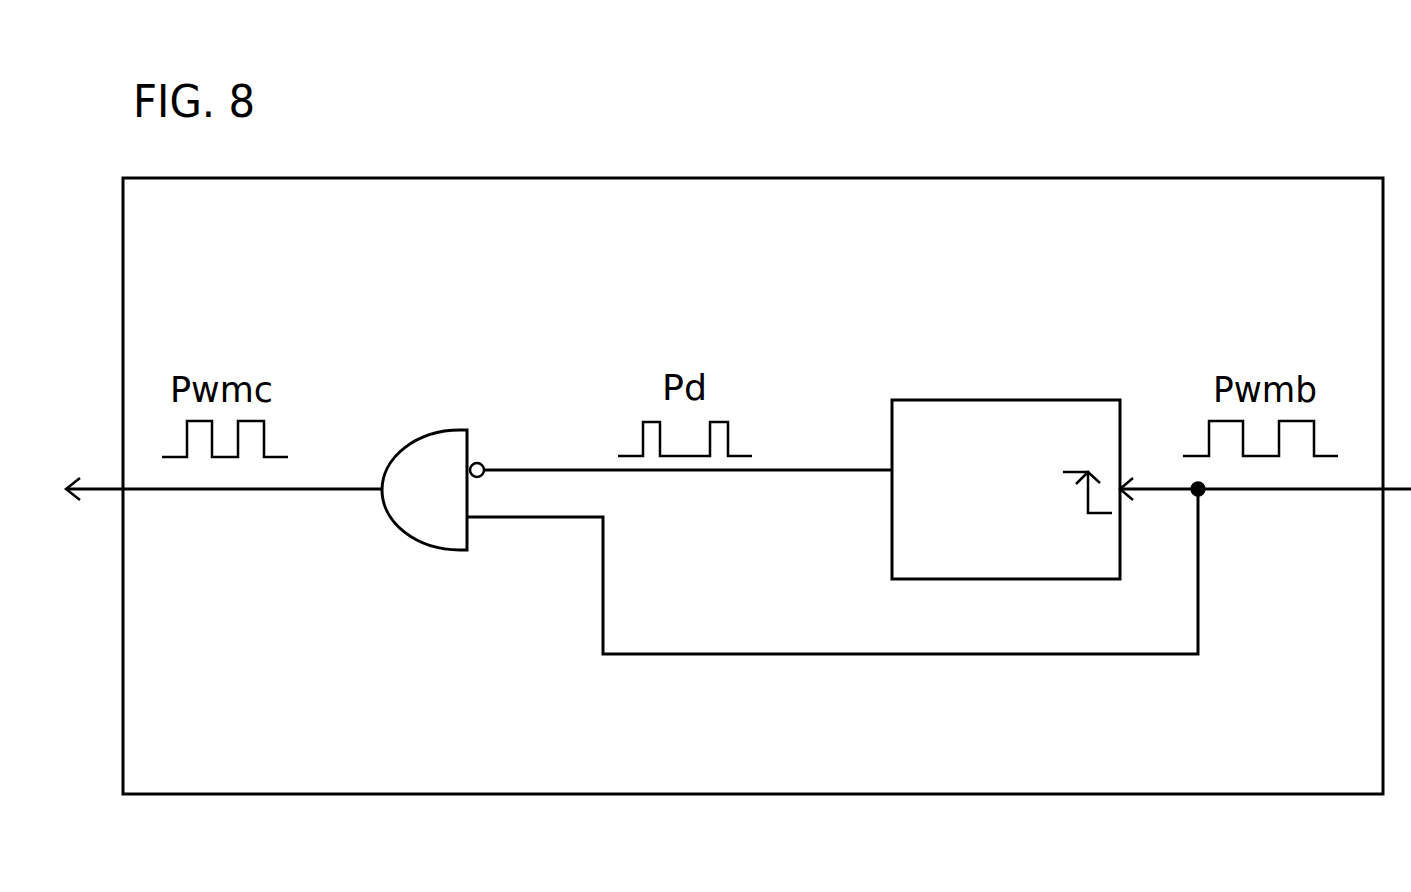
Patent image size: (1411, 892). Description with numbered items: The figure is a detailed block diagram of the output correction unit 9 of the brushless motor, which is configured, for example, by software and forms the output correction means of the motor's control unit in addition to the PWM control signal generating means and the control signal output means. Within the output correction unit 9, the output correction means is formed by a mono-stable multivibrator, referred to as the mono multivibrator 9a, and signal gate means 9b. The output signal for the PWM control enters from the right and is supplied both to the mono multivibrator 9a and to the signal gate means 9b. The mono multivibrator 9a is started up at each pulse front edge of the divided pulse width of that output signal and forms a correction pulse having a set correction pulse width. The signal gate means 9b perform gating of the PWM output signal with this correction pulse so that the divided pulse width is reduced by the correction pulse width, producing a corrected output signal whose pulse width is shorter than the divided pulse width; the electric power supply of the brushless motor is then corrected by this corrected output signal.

The output correction unit 9 is at (738, 178).
The mono multivibrator 9a is at (913, 400).
The signal gate means 9b is at (406, 447).